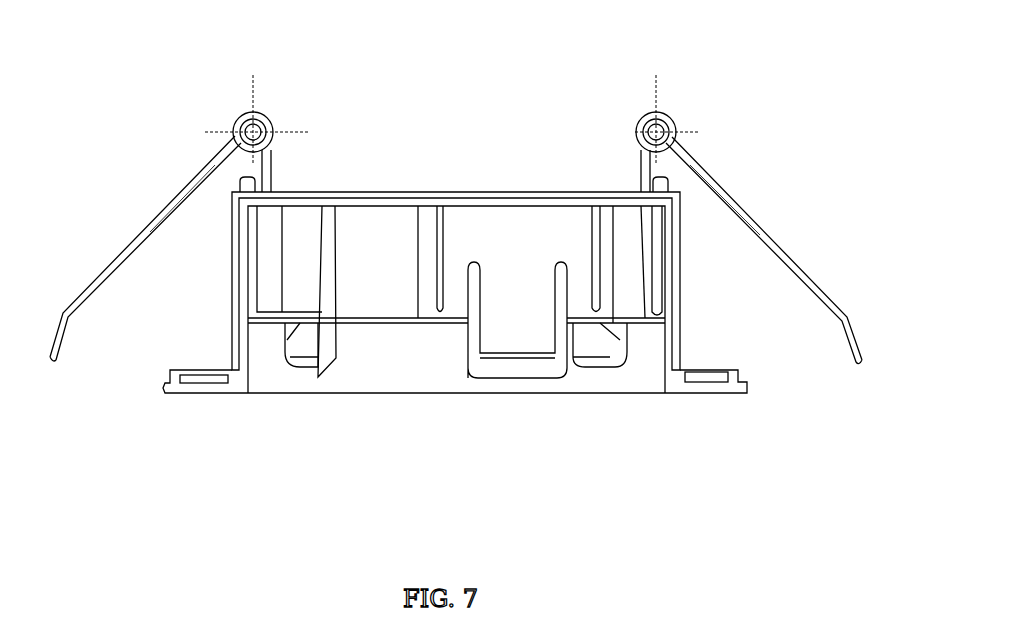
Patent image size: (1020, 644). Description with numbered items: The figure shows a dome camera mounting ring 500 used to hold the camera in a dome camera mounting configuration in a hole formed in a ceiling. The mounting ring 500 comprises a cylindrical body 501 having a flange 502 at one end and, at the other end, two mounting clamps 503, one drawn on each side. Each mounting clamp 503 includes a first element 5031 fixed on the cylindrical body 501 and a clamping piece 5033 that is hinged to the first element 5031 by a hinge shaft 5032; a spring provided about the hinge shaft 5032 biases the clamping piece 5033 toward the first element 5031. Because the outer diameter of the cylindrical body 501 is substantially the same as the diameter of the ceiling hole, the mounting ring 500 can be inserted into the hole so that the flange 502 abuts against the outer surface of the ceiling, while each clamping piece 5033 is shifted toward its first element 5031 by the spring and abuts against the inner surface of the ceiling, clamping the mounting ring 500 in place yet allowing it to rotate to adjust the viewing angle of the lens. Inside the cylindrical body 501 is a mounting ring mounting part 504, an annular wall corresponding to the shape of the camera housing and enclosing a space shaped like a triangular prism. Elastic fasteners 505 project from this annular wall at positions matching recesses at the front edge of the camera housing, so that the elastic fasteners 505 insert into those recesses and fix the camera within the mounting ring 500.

The dome camera mounting ring 500 is at (458, 269).
The cylindrical body 501 is at (232, 295).
The flange 502 is at (212, 387).
The mounting clamp 503 is at (220, 124).
The first element 5031 is at (648, 168).
The hinge shaft 5032 is at (663, 123).
The clamping piece 5033 is at (755, 205).
The mounting ring mounting part 504 is at (400, 305).
The elastic fastener 505 is at (530, 368).